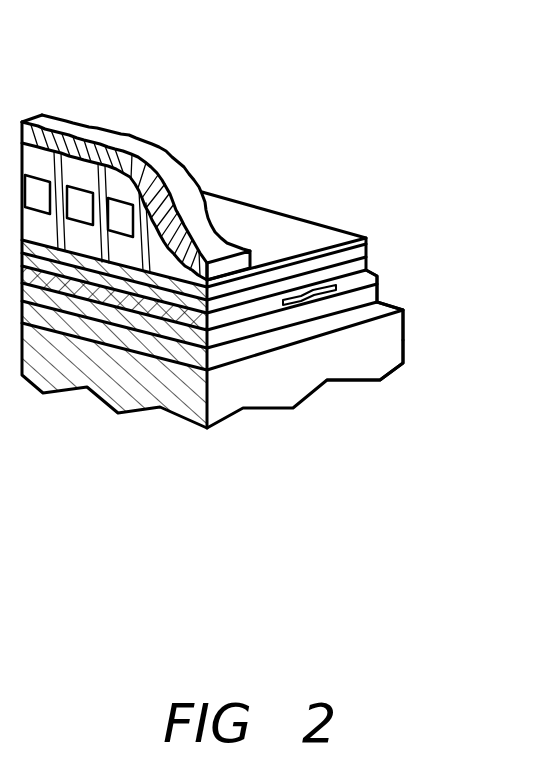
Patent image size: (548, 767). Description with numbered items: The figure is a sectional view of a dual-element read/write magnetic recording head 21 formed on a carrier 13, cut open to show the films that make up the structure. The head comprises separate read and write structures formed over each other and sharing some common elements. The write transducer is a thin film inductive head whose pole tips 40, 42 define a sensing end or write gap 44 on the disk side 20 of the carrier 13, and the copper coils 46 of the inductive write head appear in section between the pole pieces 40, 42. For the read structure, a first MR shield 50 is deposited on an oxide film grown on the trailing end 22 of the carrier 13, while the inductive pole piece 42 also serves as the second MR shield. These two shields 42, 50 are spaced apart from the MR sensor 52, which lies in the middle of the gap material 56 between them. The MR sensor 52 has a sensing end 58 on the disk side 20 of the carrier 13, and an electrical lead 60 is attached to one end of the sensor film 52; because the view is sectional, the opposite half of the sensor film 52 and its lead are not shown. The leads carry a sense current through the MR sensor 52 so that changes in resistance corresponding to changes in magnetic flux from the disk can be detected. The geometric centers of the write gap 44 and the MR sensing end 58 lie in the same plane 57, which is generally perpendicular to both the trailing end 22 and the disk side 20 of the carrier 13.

The read/write head 21 is at (173, 90).
The copper coils 46 is at (124, 214).
The pole tip 40 is at (233, 268).
The write gap 44 is at (240, 285).
The pole tip 42 is at (320, 274).
The electrical lead 60 is at (352, 296).
The trailing end 22 is at (380, 299).
The carrier 13 is at (403, 333).
The disk side 20 is at (386, 338).
The gap material 56 is at (48, 298).
The first MR shield 50 is at (115, 340).
The MR sensor 52 is at (183, 325).
The plane 57 is at (147, 367).
The sensing end 58 is at (232, 327).